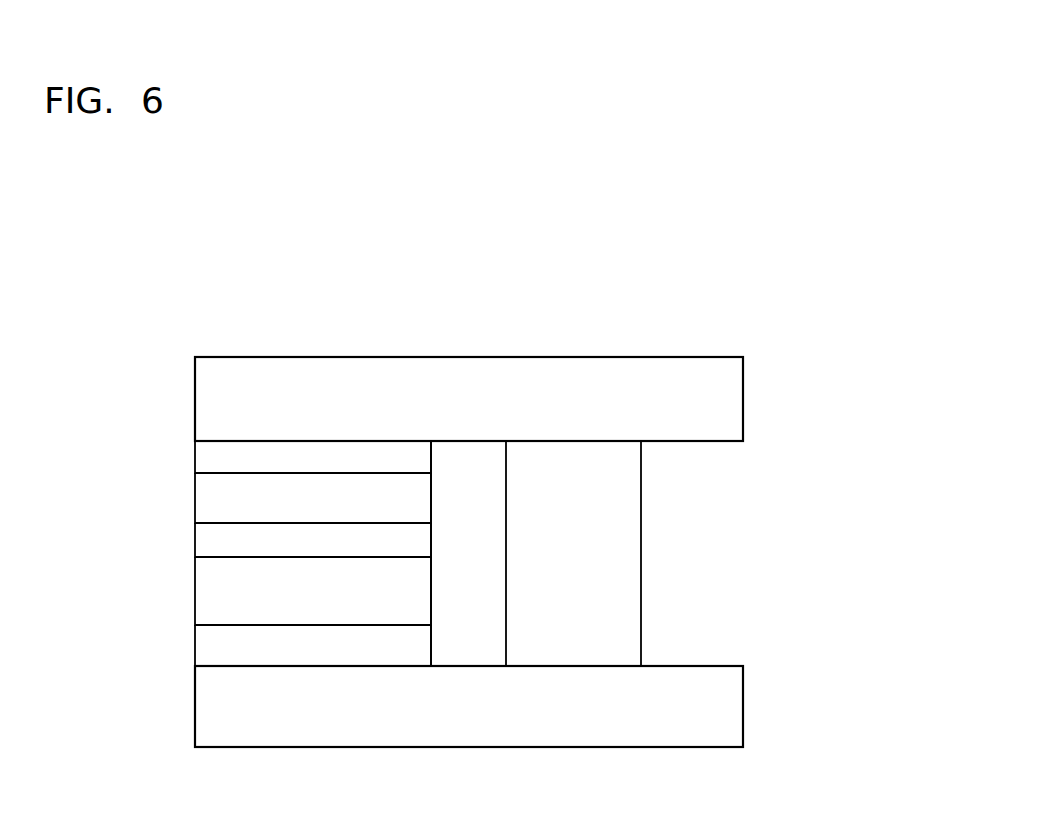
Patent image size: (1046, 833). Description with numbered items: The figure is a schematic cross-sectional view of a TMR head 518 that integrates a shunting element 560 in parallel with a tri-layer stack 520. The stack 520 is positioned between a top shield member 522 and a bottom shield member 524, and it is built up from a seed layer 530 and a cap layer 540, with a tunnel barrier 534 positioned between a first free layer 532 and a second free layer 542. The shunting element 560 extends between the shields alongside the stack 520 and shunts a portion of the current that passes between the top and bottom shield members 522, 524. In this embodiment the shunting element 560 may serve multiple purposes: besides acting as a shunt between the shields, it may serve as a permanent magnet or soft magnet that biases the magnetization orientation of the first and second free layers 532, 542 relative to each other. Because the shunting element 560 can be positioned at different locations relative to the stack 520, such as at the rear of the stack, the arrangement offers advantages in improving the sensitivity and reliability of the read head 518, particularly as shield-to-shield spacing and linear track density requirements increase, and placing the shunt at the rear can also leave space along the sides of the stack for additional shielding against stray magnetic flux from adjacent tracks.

The TMR head 518 is at (772, 334).
The tri-layer stack 520 is at (450, 513).
The top shield member 522 is at (210, 378).
The bottom shield member 524 is at (217, 733).
The seed layer 530 is at (204, 455).
The first free layer 532 is at (204, 492).
The tunnel barrier 534 is at (204, 545).
The cap layer 540 is at (204, 648).
The second free layer 542 is at (204, 597).
The shunting element 560 is at (603, 610).